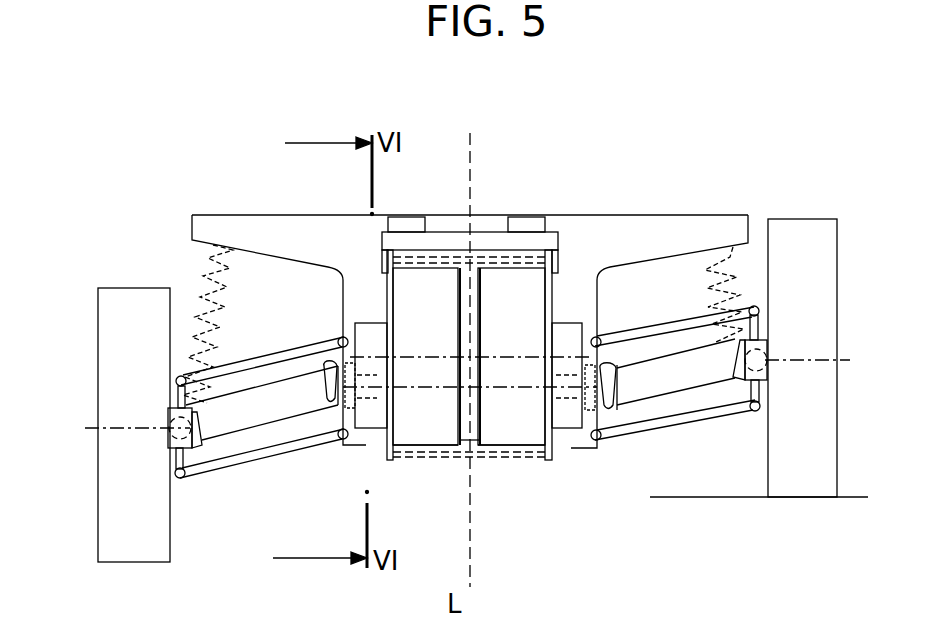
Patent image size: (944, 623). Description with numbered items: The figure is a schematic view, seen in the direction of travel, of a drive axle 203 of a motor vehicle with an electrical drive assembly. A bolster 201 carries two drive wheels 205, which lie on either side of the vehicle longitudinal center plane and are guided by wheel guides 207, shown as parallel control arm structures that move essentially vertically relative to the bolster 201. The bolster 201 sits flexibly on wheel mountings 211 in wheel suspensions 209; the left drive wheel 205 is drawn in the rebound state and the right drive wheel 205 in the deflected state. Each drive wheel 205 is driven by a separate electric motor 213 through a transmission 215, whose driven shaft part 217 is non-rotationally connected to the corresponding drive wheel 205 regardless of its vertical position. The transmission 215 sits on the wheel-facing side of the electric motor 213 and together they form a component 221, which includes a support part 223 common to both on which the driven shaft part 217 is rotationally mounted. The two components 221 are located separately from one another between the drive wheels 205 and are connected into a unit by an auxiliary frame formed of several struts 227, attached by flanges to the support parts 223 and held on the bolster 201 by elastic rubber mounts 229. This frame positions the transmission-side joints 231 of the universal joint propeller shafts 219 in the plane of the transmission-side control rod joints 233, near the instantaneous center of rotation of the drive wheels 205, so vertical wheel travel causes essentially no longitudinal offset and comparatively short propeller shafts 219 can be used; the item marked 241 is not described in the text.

The bolster 201 is at (623, 216).
The drive axle 203 is at (630, 452).
The drive wheels 205 is at (100, 303).
The wheel guides 207 is at (227, 478).
The wheel suspensions 209 is at (213, 245).
The wheel mountings 211 is at (168, 443).
The electric motor 213 is at (422, 423).
The transmission 215 is at (373, 413).
The driven shaft part 217 is at (365, 372).
The universal joint propeller shafts 219 is at (260, 410).
The component 221 is at (488, 447).
The support part 223 is at (393, 302).
The struts 227 is at (462, 235).
The elastic rubber mounts 229 is at (402, 228).
The transmission-side joints 231 is at (317, 343).
The transmission-side control rod joints 233 is at (342, 340).
The nip line 241 is at (440, 455).